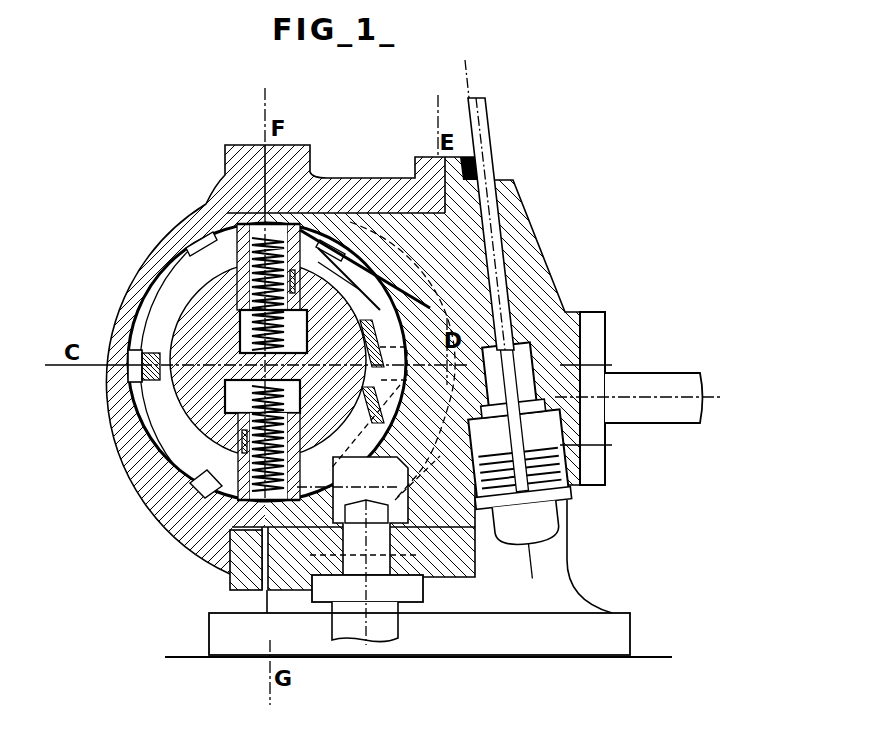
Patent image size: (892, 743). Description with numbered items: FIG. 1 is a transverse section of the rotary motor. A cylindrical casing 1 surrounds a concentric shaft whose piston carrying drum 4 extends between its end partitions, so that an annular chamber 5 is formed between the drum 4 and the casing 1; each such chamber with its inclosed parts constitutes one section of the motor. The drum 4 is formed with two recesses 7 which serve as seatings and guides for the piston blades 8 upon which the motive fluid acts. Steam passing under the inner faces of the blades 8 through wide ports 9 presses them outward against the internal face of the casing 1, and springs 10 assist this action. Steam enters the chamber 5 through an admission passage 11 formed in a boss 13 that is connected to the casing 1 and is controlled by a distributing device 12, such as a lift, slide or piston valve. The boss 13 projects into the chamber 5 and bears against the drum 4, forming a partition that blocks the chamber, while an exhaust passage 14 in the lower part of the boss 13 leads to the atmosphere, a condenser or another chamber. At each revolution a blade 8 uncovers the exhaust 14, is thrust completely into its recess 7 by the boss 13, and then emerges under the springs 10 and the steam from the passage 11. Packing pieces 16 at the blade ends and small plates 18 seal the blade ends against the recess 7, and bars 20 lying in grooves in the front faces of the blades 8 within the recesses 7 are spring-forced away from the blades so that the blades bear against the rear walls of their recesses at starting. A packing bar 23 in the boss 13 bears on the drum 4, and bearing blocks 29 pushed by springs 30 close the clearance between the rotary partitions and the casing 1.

The cylindrical casing 1 is at (262, 148).
The piston carrying drum 4 is at (183, 400).
The annular chamber 5 is at (120, 303).
The recess 7 is at (240, 327).
The piston blade 8 is at (313, 210).
The port 9 is at (248, 456).
The spring 10 is at (237, 300).
The admission passage 11 is at (412, 318).
The distributing device 12 is at (583, 398).
The boss 13 is at (440, 252).
The exhaust passage 14 is at (368, 550).
The packing piece 16 is at (214, 197).
The small plate 18 is at (207, 220).
The outlet port 20 is at (195, 486).
The packing bar 23 is at (482, 345).
The bearing block 29 is at (137, 373).
The spring 30 is at (128, 350).